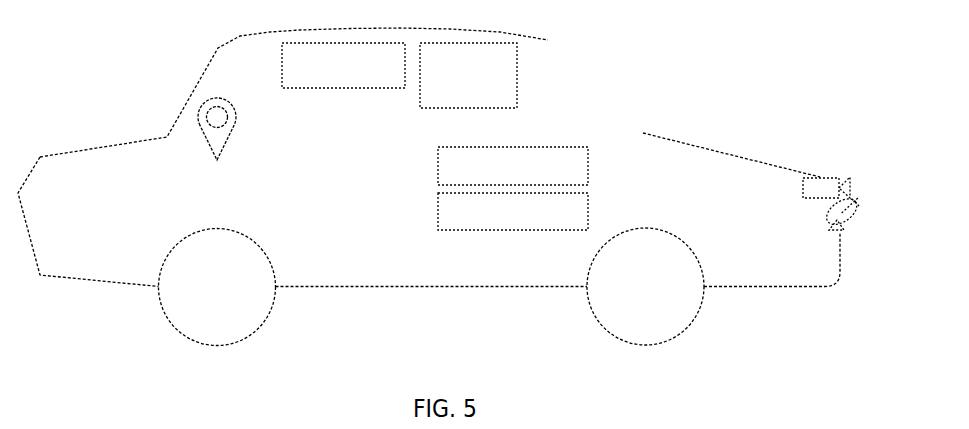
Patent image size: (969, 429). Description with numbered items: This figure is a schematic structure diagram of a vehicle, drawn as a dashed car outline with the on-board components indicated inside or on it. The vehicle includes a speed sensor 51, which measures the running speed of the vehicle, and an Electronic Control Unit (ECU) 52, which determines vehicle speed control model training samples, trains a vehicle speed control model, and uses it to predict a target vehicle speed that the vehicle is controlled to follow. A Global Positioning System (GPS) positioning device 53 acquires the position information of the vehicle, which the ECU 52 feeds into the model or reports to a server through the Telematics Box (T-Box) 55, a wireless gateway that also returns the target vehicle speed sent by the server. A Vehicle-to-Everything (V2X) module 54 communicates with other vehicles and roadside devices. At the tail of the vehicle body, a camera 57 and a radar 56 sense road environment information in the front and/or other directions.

The speed sensor 51 is at (513, 211).
The Electronic Control Unit (ECU) 52 is at (513, 166).
The Global Positioning System (GPS) positioning device 53 is at (290, 143).
The Vehicle-to-Everything (V2X) module 54 is at (468, 75).
The Telematics Box (T-Box) 55 is at (343, 65).
The radar 56 is at (874, 212).
The camera 57 is at (869, 187).